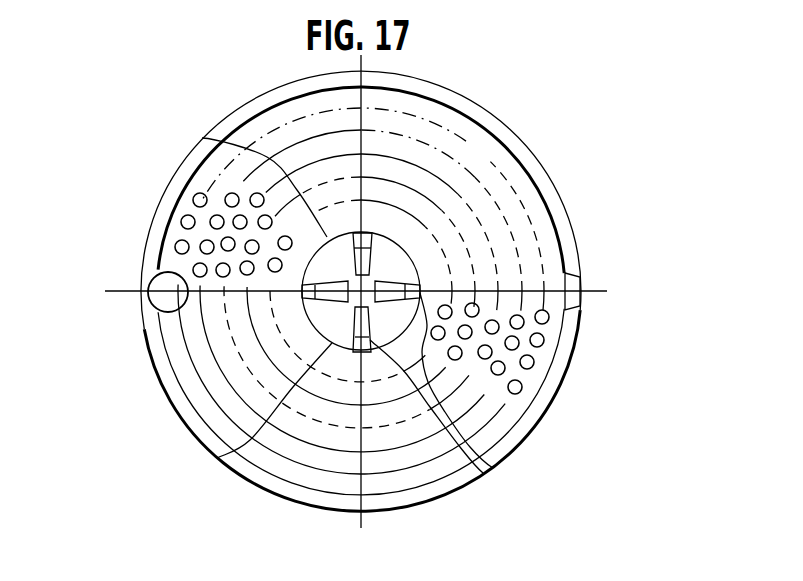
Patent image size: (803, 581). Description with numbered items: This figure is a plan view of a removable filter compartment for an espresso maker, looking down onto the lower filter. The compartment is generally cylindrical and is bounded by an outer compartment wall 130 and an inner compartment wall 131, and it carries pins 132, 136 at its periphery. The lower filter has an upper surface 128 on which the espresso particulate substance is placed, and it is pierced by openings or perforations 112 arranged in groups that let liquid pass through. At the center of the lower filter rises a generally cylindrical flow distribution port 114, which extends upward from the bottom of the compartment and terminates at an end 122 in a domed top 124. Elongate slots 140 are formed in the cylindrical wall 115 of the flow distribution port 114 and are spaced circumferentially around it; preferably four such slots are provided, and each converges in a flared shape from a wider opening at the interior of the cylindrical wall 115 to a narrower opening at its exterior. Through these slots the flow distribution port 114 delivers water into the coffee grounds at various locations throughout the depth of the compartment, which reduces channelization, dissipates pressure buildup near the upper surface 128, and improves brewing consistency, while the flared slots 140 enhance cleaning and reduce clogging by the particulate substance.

The openings or perforations 112 is at (549, 319).
The flow distribution port 114 is at (217, 458).
The cylindrical wall 115 is at (202, 138).
The end 122 is at (365, 288).
The domed top 124 is at (400, 268).
The upper surface 128 is at (222, 373).
The outer compartment wall 130 is at (580, 270).
The inner compartment wall 131 is at (560, 244).
The pin 132 is at (153, 307).
The pin 136 is at (580, 300).
The elongate slots 140 is at (483, 473).